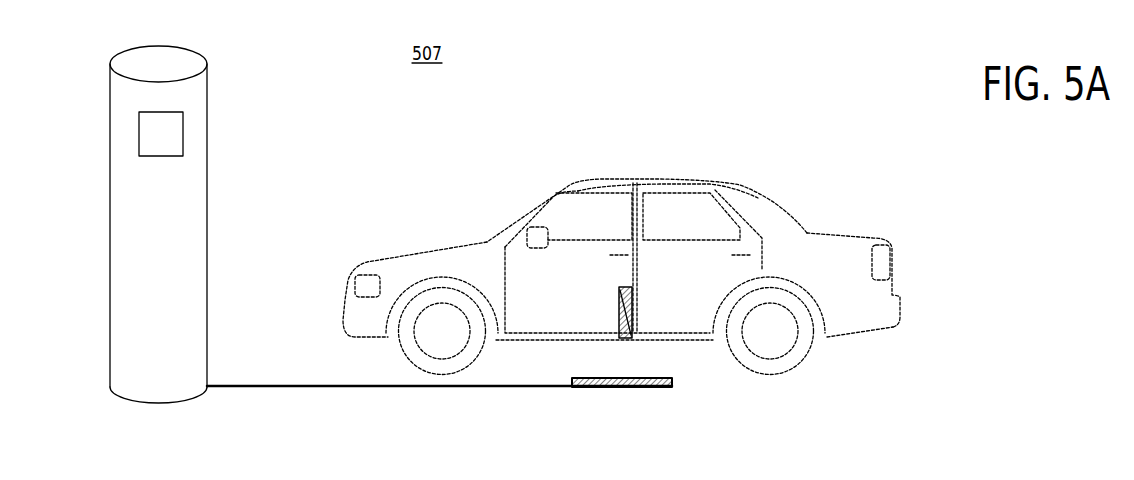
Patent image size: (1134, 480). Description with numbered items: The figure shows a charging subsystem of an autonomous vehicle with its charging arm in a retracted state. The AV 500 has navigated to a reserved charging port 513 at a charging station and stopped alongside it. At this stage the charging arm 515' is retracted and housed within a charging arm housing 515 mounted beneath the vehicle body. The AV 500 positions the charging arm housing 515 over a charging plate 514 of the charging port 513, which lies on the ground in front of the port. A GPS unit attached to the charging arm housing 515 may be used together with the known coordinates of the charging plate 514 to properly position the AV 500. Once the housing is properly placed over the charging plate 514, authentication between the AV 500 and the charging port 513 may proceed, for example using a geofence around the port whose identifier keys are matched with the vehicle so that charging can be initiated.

The autonomous vehicle 500 is at (456, 175).
The charging port 513 is at (225, 76).
The charging plate 514 is at (603, 388).
The charging arm housing 515 is at (670, 332).
The charging arm in retracted state 515' is at (573, 331).